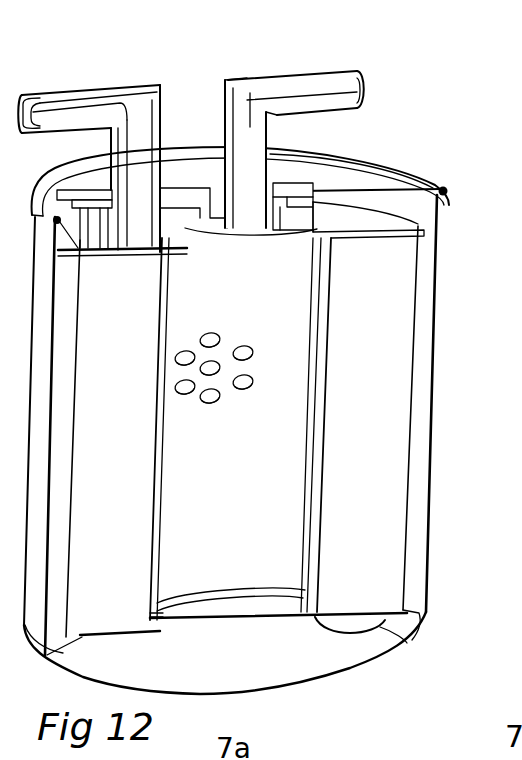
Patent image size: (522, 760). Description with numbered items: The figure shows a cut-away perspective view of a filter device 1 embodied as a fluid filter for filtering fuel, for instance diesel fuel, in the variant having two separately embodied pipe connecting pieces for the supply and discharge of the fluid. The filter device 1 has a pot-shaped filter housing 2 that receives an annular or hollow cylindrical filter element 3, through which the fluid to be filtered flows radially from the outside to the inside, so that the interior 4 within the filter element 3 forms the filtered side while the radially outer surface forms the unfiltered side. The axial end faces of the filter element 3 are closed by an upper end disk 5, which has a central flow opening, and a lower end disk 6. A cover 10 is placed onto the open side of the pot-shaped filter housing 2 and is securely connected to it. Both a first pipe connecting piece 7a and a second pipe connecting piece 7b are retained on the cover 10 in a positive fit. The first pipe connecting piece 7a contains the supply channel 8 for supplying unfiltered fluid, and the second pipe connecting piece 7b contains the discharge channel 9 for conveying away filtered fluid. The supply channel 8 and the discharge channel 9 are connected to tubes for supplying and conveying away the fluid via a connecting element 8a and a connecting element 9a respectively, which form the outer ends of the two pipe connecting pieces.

The filter device 1 is at (407, 147).
The filter housing 2 is at (432, 493).
The filter element 3 is at (386, 557).
The interior 4 is at (232, 560).
The upper end disk 5 is at (357, 232).
The end disk 6 is at (257, 620).
The first pipe connecting piece 7a is at (113, 84).
The second pipe connecting piece 7b is at (296, 73).
The supply channel 8 is at (137, 140).
The connecting element 8a is at (73, 97).
The discharge channel 9 is at (248, 100).
The connecting element 9a is at (322, 70).
The cover 10 is at (343, 177).